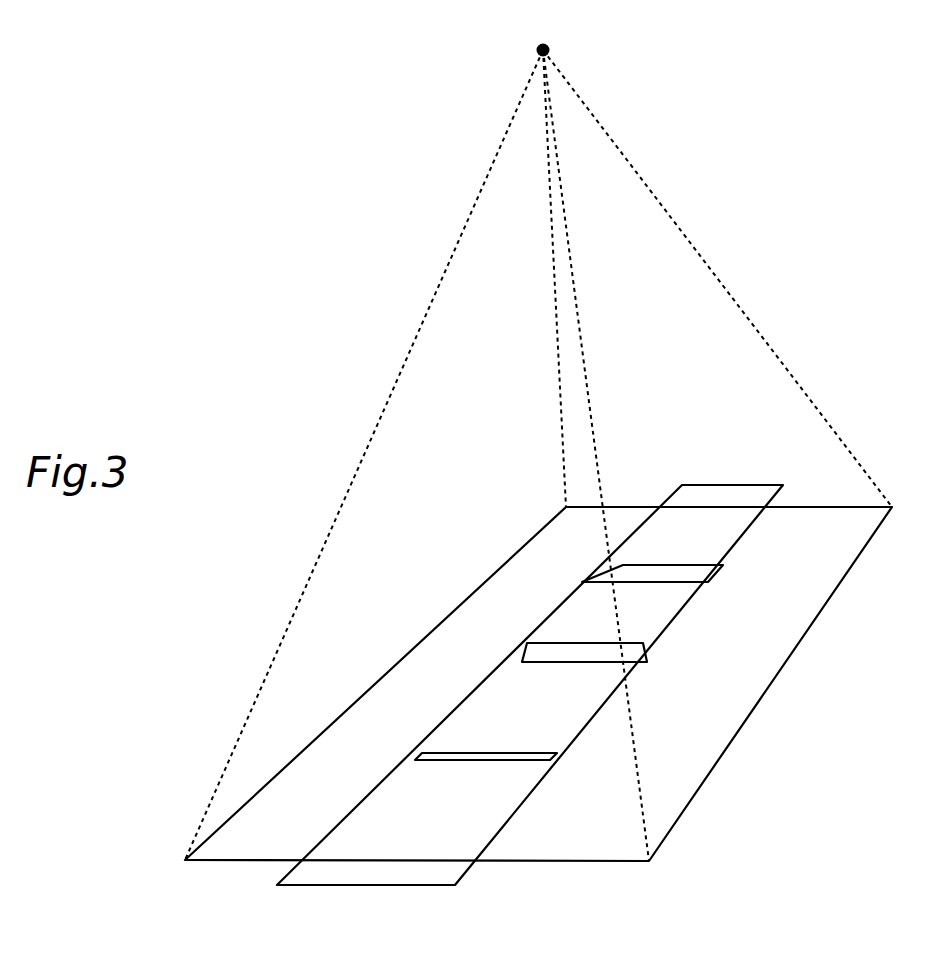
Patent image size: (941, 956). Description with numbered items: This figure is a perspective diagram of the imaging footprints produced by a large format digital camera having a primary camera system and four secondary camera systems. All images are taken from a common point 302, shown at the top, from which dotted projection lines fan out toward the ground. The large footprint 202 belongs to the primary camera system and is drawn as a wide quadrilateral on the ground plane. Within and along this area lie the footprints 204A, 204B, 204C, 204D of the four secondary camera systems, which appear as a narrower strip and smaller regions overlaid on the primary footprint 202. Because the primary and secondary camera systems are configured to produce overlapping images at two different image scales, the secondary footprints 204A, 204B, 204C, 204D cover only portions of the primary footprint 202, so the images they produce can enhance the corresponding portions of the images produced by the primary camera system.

The common point 302 is at (550, 51).
The footprint of the primary camera system 202 is at (367, 733).
The footprint of a secondary camera system 204A is at (503, 802).
The footprint of a secondary camera system 204B is at (497, 688).
The footprint of a secondary camera system 204C is at (677, 612).
The footprint of a secondary camera system 204D is at (727, 542).